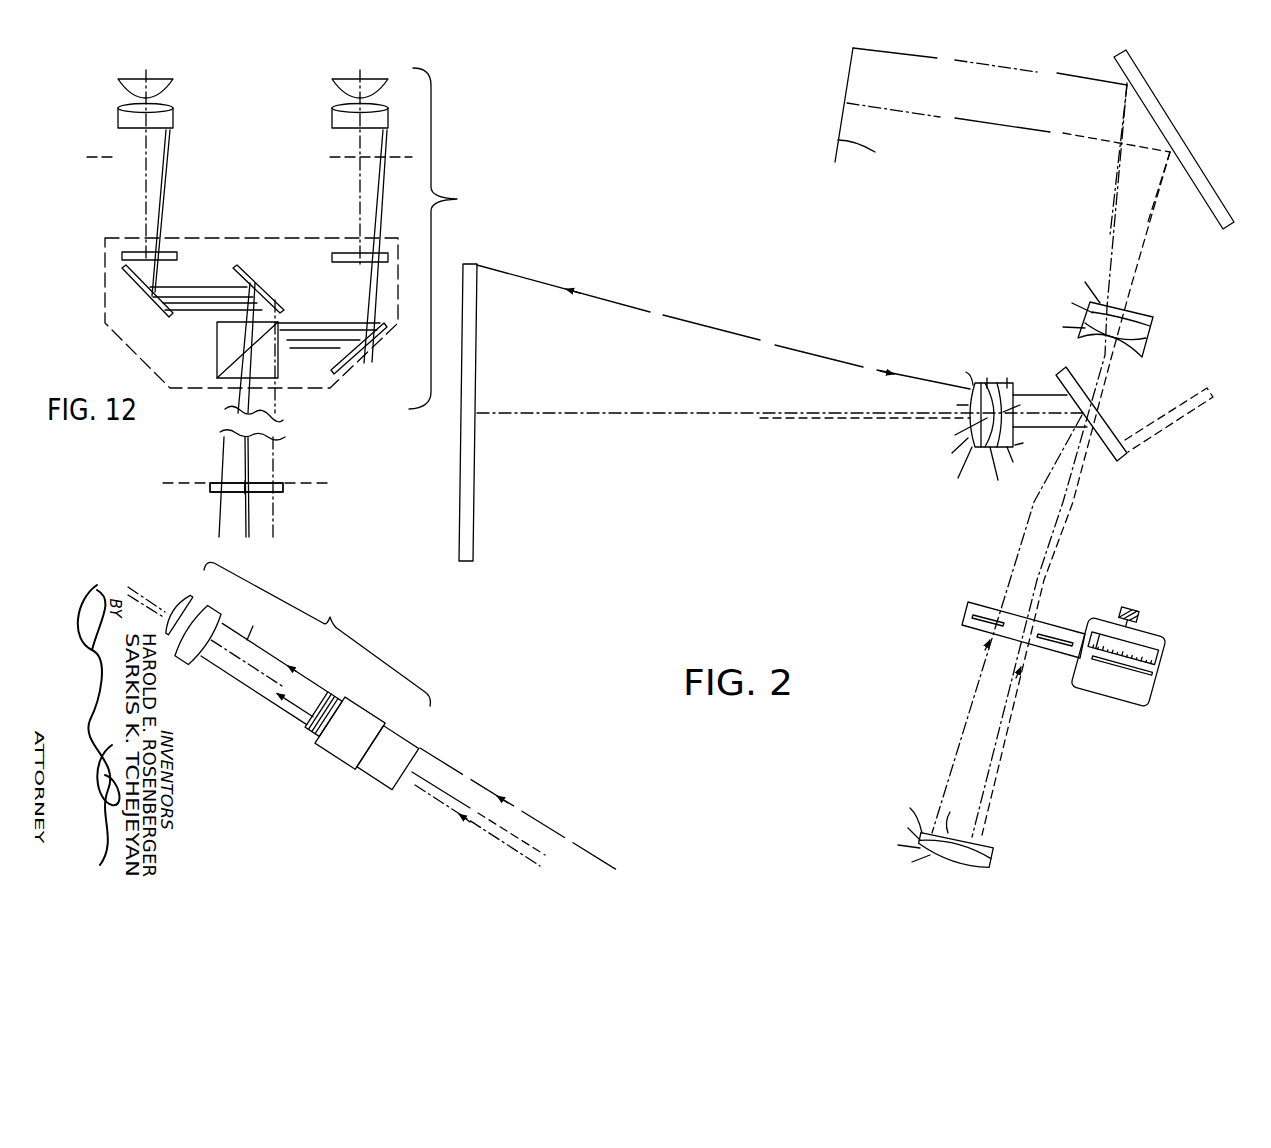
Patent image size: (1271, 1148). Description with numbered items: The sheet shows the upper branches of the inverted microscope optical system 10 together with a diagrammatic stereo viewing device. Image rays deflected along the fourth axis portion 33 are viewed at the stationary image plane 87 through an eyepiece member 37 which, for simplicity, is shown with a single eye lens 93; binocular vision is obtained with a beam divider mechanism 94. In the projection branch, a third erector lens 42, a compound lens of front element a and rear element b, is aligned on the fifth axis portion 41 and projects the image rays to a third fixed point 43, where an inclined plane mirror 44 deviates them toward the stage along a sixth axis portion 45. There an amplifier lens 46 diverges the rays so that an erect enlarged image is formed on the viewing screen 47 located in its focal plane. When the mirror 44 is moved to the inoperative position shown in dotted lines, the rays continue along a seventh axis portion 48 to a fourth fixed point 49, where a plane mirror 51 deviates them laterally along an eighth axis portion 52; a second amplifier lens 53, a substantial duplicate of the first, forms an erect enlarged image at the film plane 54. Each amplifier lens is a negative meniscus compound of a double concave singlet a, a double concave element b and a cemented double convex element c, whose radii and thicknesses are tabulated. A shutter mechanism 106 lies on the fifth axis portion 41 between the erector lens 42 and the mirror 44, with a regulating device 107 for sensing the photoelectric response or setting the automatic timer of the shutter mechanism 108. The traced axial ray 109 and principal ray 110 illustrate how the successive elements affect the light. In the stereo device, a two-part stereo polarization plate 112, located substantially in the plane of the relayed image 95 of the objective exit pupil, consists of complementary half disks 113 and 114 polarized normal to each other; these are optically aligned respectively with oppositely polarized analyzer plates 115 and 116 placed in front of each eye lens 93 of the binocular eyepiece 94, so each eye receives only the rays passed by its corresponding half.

In FIG. 2, the optical system 10 is at (377, 583).
In FIG. 2, the fourth axis portion 33 is at (527, 843).
In FIG. 12, the eyepiece member 37 is at (446, 238).
In FIG. 2, the eyepiece member 37 is at (315, 643).
In FIG. 2, the fifth optical axis portion 41 is at (982, 760).
In FIG. 2, the third erector lens 42 is at (993, 853).
In FIG. 2, the third fixed point 43 is at (1084, 430).
In FIG. 2, the plane mirror 44 is at (1127, 443).
In FIG. 2, the sixth axis portion 45 is at (837, 417).
In FIG. 2, the amplifier lens 46 is at (980, 447).
In FIG. 2, the viewing screen 47 is at (467, 523).
In FIG. 2, the seventh axis portion 48 is at (1132, 285).
In FIG. 2, the fourth fixed point 49 is at (1170, 152).
In FIG. 2, the plane mirror 51 is at (1217, 195).
In FIG. 2, the eighth axis portion 52 is at (993, 123).
In FIG. 2, the second amplifier lens 53 is at (1150, 335).
In FIG. 2, the film plane 54 is at (861, 156).
In FIG. 12, the stationary image plane 87 is at (325, 160).
In FIG. 2, the stationary image plane 87 is at (225, 675).
In FIG. 12, the eye lens 93 is at (328, 82).
In FIG. 2, the eye lens 93 is at (200, 594).
In FIG. 12, the beam divider mechanism 94 is at (102, 293).
In FIG. 2, the beam divider mechanism 94 is at (370, 712).
In FIG. 12, the relayed image of the exit pupil 95 is at (185, 481).
In FIG. 2, the shutter mechanism 106 is at (1052, 623).
In FIG. 2, the regulating device 107 is at (1162, 633).
In FIG. 2, the automatic timer of the shutter mechanism 108 is at (1043, 642).
In FIG. 2, the axial ray 109 is at (438, 803).
In FIG. 2, the principal ray 110 is at (463, 777).
In FIG. 12, the stereo polarization plate 112 is at (287, 491).
In FIG. 12, the half disk 113 is at (207, 485).
In FIG. 12, the half disk 114 is at (258, 487).
In FIG. 12, the analyzer plate 115 is at (122, 254).
In FIG. 12, the analyzer plate 116 is at (388, 258).